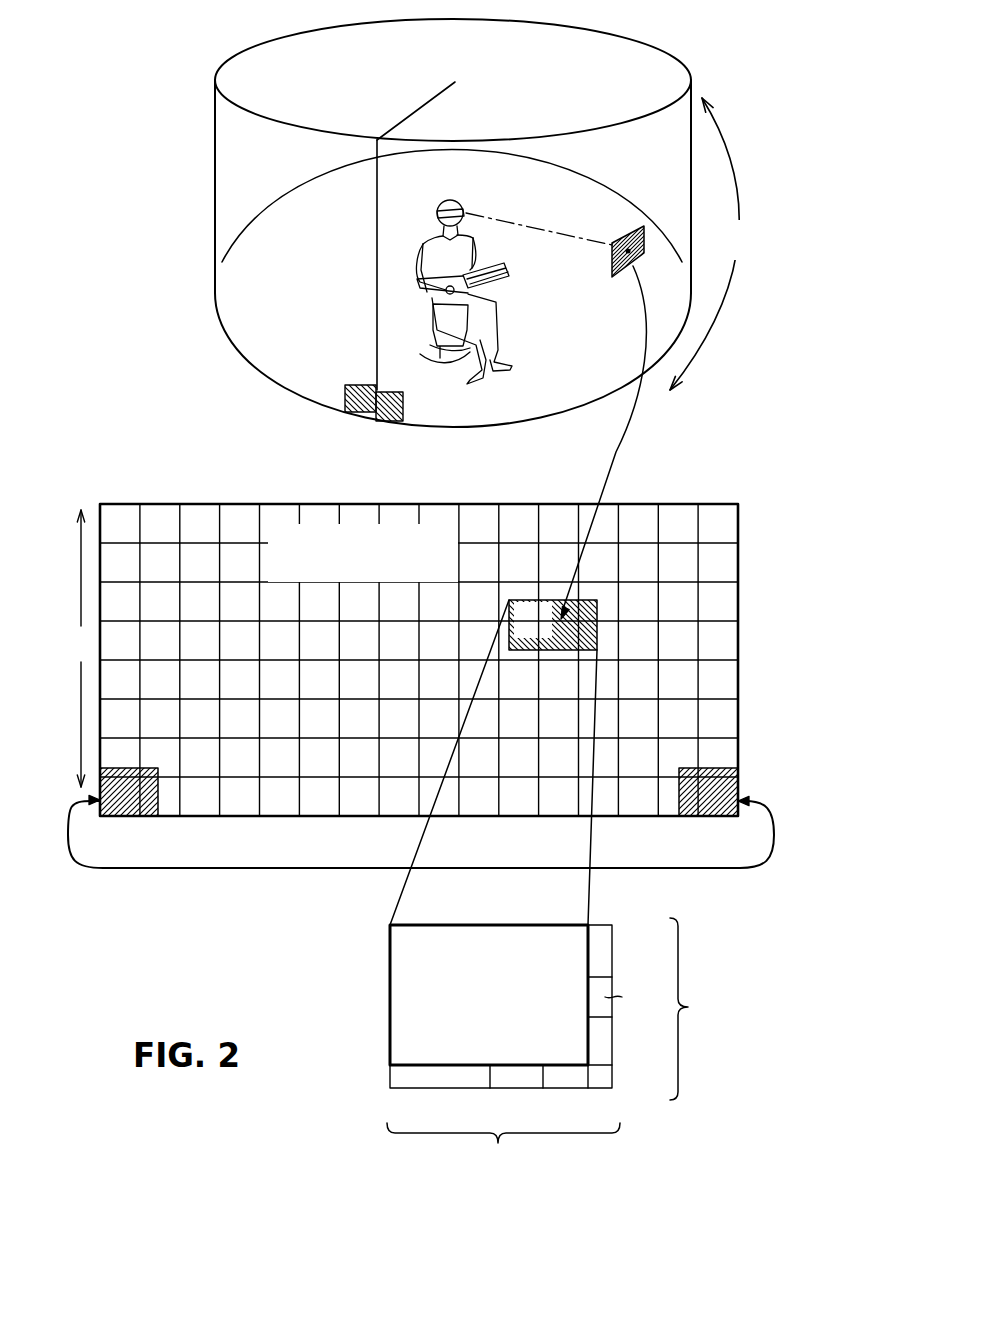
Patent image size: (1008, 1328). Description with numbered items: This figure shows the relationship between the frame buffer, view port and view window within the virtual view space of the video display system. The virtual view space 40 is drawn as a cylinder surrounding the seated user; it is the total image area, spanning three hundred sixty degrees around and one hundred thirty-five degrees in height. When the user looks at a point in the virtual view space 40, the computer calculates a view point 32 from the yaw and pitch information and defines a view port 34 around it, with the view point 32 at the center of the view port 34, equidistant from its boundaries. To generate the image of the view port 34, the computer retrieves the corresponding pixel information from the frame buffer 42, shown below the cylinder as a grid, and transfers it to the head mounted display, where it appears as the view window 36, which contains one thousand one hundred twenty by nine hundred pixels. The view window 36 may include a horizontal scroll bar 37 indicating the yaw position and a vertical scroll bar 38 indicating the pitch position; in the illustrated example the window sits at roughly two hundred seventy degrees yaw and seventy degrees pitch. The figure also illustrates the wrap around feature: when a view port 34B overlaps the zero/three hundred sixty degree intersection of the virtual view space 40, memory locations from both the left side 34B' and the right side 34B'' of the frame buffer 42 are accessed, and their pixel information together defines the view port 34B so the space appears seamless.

The virtual view space 40 is at (641, 32).
The view point 32 is at (644, 250).
The view port 34 is at (623, 236).
The view port overlapping the 0°/360° intersection 34B is at (390, 391).
The frame buffer 42 is at (100, 504).
The left side region of the frame buffer 34B' is at (89, 792).
The right side region of the frame buffer 34B'' is at (739, 779).
The view window 36 is at (390, 925).
The horizontal scroll bar 37 is at (448, 1086).
The vertical scroll bar 38 is at (607, 954).